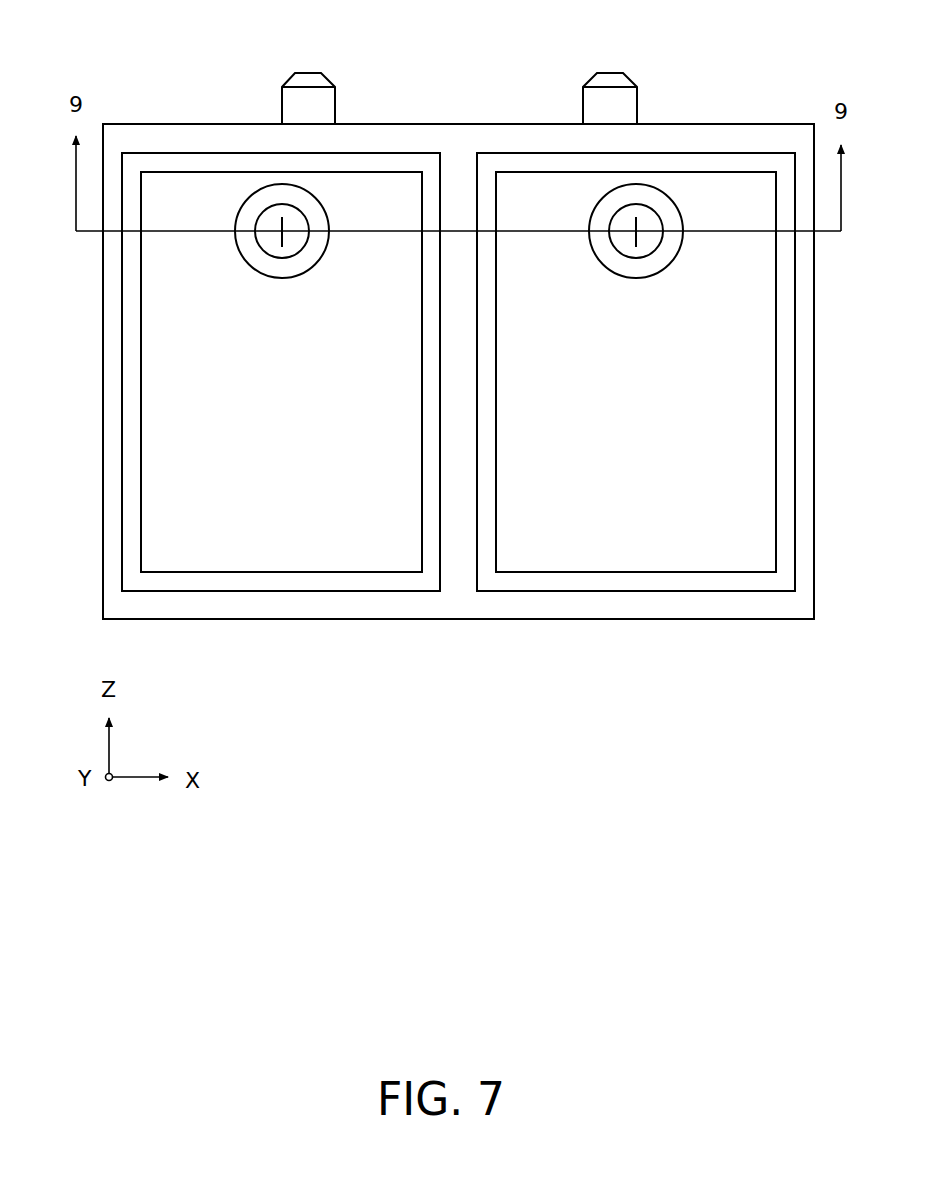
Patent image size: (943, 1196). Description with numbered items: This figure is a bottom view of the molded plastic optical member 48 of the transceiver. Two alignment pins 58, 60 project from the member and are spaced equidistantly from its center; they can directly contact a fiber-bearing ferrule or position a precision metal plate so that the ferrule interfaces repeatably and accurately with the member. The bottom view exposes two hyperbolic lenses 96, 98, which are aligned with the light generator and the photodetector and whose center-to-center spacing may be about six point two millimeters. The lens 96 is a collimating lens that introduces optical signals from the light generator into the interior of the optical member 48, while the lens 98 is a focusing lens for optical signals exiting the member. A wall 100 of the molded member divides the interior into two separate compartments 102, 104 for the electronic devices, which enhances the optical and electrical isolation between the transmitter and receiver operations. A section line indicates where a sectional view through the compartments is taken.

The optical member 48 is at (755, 36).
The alignment pin 58 is at (308, 74).
The alignment pin 60 is at (612, 77).
The hyperbolic lens 96 is at (272, 251).
The hyperbolic lens 98 is at (628, 252).
The wall 100 is at (463, 425).
The compartment 102 is at (163, 420).
The compartment 104 is at (756, 425).